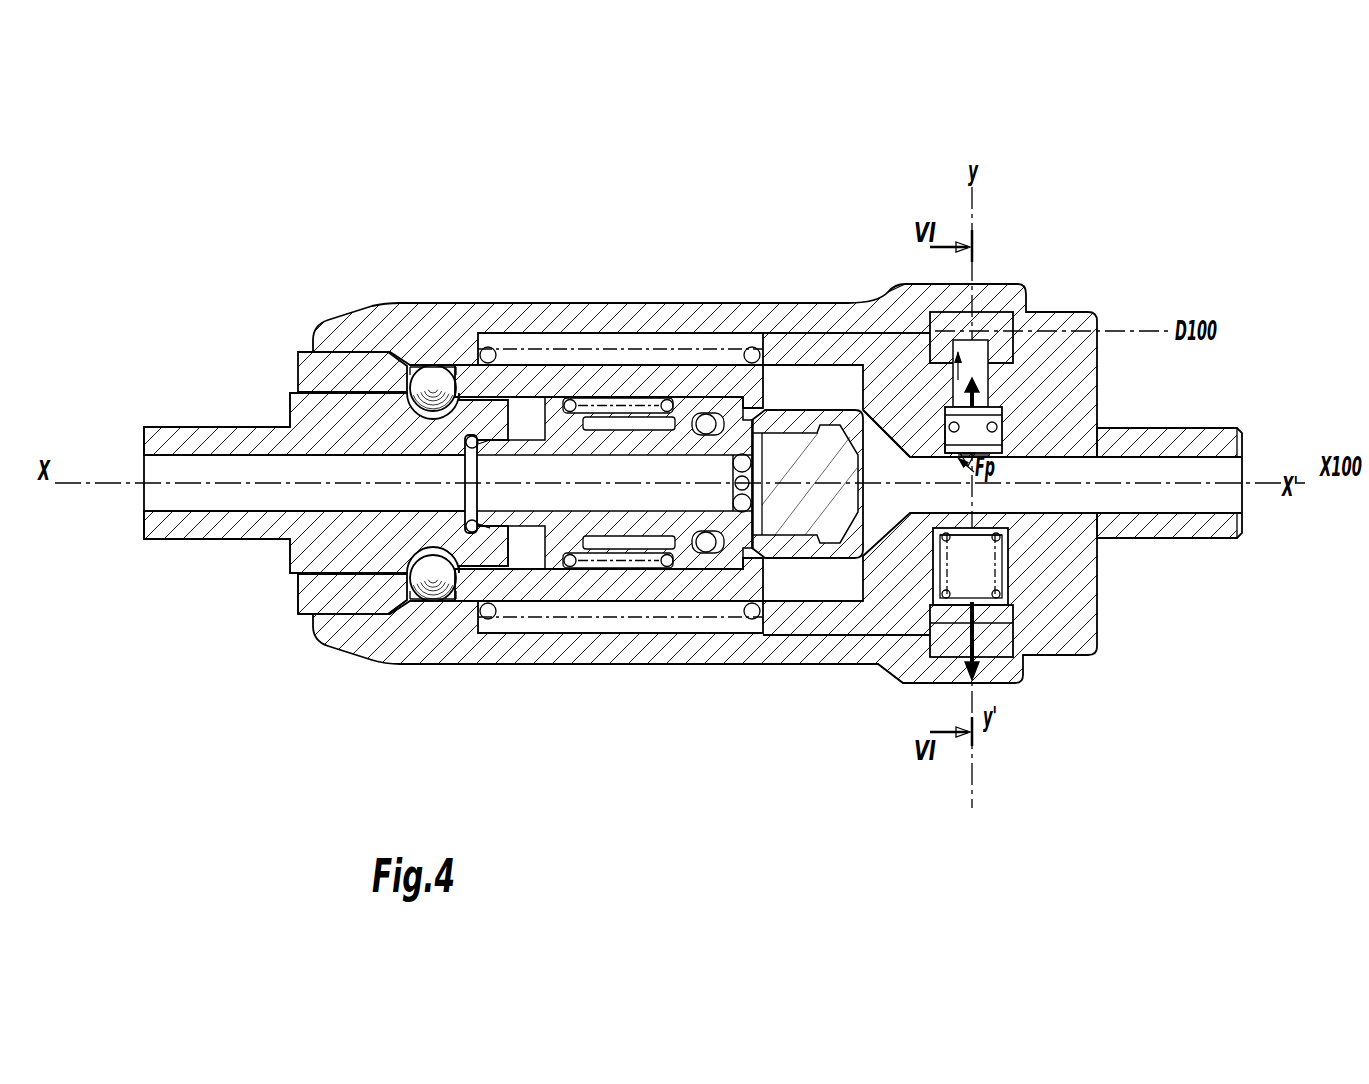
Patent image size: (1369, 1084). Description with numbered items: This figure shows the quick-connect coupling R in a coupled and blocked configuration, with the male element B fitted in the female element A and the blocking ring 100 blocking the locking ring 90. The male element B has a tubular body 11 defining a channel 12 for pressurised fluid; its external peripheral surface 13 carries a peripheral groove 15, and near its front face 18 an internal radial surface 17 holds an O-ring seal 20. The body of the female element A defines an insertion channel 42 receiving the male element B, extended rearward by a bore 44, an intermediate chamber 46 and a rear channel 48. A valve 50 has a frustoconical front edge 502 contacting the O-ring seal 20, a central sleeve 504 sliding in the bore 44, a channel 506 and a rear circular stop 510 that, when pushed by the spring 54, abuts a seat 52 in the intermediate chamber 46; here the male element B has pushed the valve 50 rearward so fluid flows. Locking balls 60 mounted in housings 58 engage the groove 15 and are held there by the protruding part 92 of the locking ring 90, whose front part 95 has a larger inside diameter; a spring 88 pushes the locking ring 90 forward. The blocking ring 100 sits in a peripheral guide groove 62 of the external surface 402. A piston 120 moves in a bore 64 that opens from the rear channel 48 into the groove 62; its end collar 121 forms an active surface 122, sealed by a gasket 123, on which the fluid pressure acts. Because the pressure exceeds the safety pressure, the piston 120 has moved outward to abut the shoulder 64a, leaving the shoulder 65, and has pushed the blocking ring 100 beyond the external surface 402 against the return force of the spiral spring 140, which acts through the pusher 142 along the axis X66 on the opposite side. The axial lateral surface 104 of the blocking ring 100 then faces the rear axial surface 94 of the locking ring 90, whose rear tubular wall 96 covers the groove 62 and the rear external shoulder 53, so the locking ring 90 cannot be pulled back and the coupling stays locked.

The tubular body 11 is at (303, 415).
The channel 12 is at (222, 497).
The external peripheral surface 13 is at (343, 410).
The peripheral groove 15 is at (432, 570).
The internal radial surface 17 is at (518, 452).
The front face 18 is at (522, 556).
The O-ring seal 20 is at (463, 461).
The insertion channel 42 is at (516, 497).
The bore 44 is at (643, 440).
The intermediate chamber 46 is at (790, 552).
The rear channel 48 is at (1265, 497).
The valve 50 is at (831, 550).
The seat 52 is at (768, 418).
The rear external shoulder 53 is at (983, 685).
The spring 54 is at (668, 566).
The housings 58 is at (365, 352).
The locking balls 60 is at (440, 388).
The peripheral guide groove 62 is at (962, 345).
The bore 64 is at (936, 334).
The shoulder 64a is at (945, 440).
The shoulder 65 is at (955, 458).
The spring 88 is at (548, 398).
The locking ring 90 is at (657, 318).
The protruding part 92 is at (402, 365).
The rear axial surface 94 is at (937, 638).
The front part 95 is at (313, 592).
The rear tubular wall 96 is at (1017, 312).
The blocking ring 100 is at (1050, 322).
The axial lateral surface 104 is at (926, 325).
The piston 120 is at (987, 390).
The end collar 121 is at (1004, 412).
The active surface 122 is at (972, 472).
The gasket 123 is at (998, 458).
The spiral spring 140 is at (1010, 562).
The pusher 142 is at (1010, 553).
The external surface 402 is at (907, 642).
The frustoconical front edge 502 is at (474, 535).
The central sleeve 504 is at (594, 418).
The channel 506 is at (377, 603).
The rear circular stop 510 is at (832, 458).
The quick-connect coupling R is at (742, 200).
The female element A is at (1139, 316).
The male element B is at (168, 410).
The longitudinal axis of the spring housing X66 is at (972, 750).